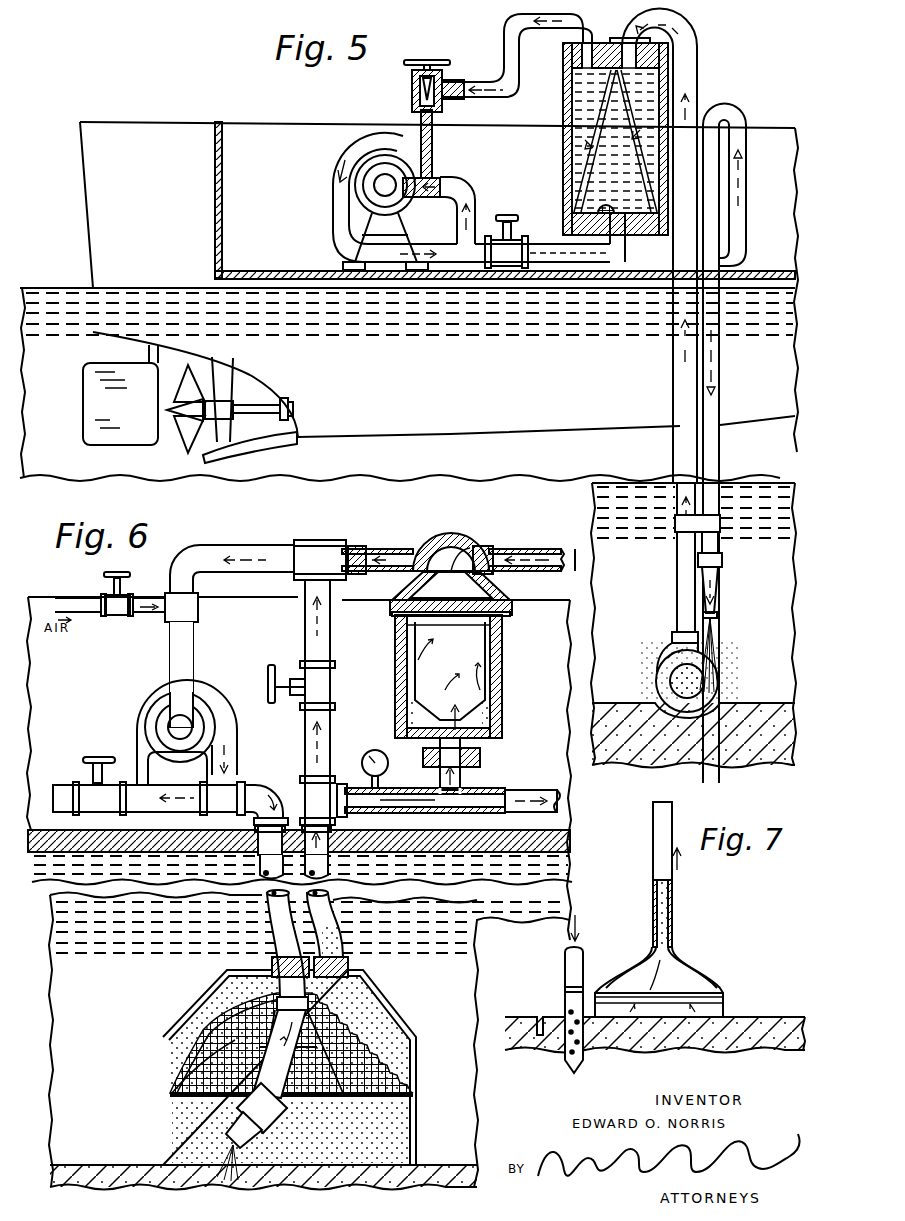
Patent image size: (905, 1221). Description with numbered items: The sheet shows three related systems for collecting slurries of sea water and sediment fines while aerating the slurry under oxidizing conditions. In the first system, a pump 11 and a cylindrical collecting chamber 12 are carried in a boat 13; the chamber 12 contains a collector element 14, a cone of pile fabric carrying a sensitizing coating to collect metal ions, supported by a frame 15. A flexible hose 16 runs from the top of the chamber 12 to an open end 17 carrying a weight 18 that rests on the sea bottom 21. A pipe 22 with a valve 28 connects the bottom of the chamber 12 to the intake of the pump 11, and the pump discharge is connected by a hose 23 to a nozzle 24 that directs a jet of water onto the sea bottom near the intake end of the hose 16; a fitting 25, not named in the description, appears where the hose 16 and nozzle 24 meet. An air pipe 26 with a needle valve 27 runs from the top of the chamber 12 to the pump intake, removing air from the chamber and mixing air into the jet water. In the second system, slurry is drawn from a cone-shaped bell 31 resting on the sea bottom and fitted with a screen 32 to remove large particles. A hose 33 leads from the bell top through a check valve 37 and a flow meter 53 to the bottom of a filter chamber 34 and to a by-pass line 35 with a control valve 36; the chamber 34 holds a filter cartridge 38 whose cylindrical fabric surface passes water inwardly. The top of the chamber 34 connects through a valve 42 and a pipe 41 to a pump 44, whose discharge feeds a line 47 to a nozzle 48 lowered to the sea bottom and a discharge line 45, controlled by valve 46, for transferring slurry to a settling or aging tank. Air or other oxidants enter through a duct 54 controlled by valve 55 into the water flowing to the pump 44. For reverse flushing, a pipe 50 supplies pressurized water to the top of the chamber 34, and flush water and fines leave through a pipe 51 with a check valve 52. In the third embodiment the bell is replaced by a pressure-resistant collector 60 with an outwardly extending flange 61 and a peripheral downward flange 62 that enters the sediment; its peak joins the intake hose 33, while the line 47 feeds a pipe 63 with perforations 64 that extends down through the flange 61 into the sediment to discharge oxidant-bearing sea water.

In FIG. 5, the pump 11 is at (366, 153).
In FIG. 5, the cylindrical collecting chamber 12 is at (563, 146).
In FIG. 5, the boat 13 is at (259, 262).
In FIG. 5, the collector element 14 is at (604, 203).
In FIG. 5, the frame 15 is at (590, 120).
In FIG. 5, the flexible hose 16 is at (698, 58).
In FIG. 5, the open end 17 is at (662, 668).
In FIG. 5, the weight 18 is at (656, 690).
In FIG. 5, the sea bottom 21 is at (790, 703).
In FIG. 6, the sea bottom 21 is at (58, 1165).
In FIG. 7, the sea bottom 21 is at (790, 1017).
In FIG. 5, the pipe 22 is at (467, 194).
In FIG. 5, the hose 23 is at (334, 210).
In FIG. 5, the nozzle 24 is at (720, 596).
In FIG. 5, the pipe collar 25 is at (720, 530).
In FIG. 5, the air pipe 26 is at (504, 52).
In FIG. 6, the air pipe 26 is at (183, 1103).
In FIG. 5, the needle valve 27 is at (412, 92).
In FIG. 5, the valve 28 is at (505, 267).
In FIG. 6, the cone shaped bell 31 is at (418, 1120).
In FIG. 6, the screen 32 is at (337, 1034).
In FIG. 6, the hose 33 is at (413, 870).
In FIG. 7, the hose 33 is at (673, 906).
In FIG. 6, the filter chamber 34 is at (503, 665).
In FIG. 6, the by-pass line 35 is at (331, 646).
In FIG. 6, the control valve 36 is at (278, 665).
In FIG. 6, the check valve 37 is at (360, 811).
In FIG. 6, the filter cartridge 38 is at (450, 676).
In FIG. 6, the pipe 41 is at (268, 552).
In FIG. 6, the valve 42 is at (452, 535).
In FIG. 6, the pump 44 is at (128, 731).
In FIG. 6, the discharge line 45 is at (55, 802).
In FIG. 6, the valve 46 is at (85, 762).
In FIG. 6, the line 47 is at (273, 910).
In FIG. 7, the line 47 is at (585, 957).
In FIG. 6, the nozzle 48 is at (250, 1128).
In FIG. 6, the pipe 50 is at (545, 569).
In FIG. 6, the pipe 51 is at (550, 807).
In FIG. 6, the check valve 52 is at (480, 813).
In FIG. 6, the flow meter 53 is at (362, 768).
In FIG. 6, the duct 54 is at (165, 612).
In FIG. 6, the valve 55 is at (118, 615).
In FIG. 7, the cone-shaped bell 60 is at (707, 966).
In FIG. 7, the outwardly extending flange 61 is at (748, 1017).
In FIG. 7, the peripheral downwardly extending flange 62 is at (540, 1020).
In FIG. 7, the pipe 63 is at (565, 1003).
In FIG. 7, the perforations 64 is at (585, 1052).